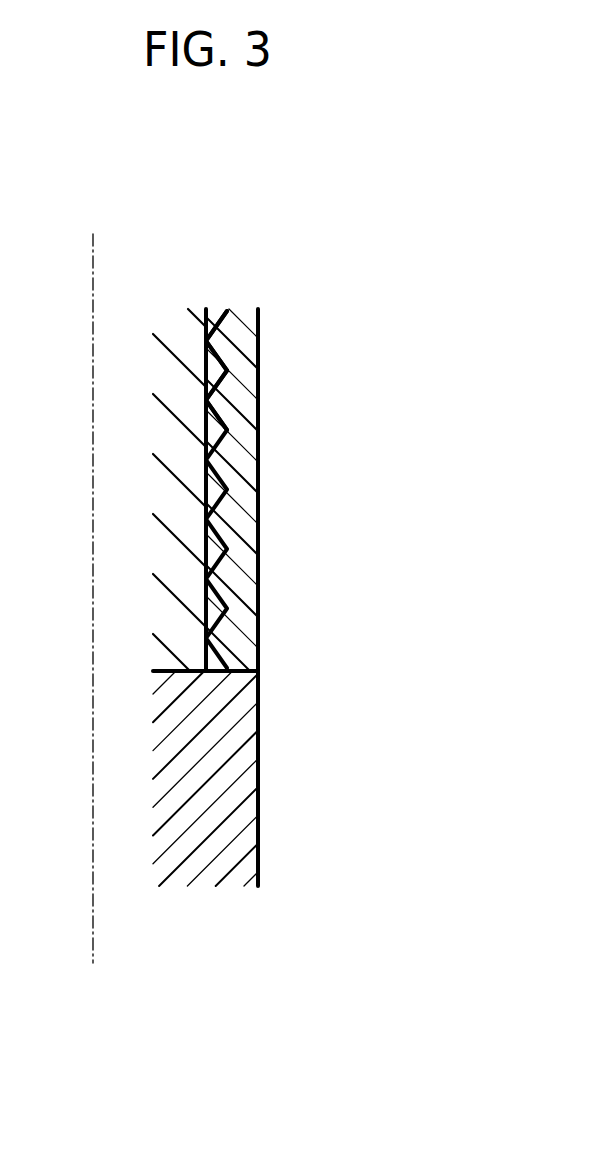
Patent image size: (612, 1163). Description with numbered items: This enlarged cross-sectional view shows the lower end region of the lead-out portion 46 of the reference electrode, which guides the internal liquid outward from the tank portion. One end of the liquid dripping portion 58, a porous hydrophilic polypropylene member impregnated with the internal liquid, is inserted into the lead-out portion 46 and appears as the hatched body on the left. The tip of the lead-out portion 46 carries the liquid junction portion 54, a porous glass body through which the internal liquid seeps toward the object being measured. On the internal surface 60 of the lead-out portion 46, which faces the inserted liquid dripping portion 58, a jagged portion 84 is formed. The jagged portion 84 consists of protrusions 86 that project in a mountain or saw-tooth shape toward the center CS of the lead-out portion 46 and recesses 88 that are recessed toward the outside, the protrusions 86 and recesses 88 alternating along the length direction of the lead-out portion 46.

The liquid dripping portion 58 is at (168, 308).
The protrusions 86 is at (222, 372).
The recesses 88 is at (210, 388).
The jagged portion 84 is at (297, 370).
The internal surface 60 is at (226, 492).
The lead-out portion 46 is at (258, 532).
The liquid junction portion 54 is at (258, 767).
The center CS is at (92, 888).